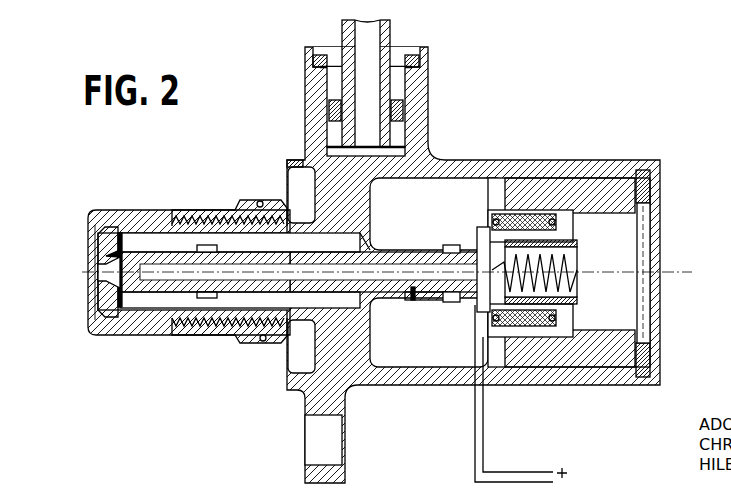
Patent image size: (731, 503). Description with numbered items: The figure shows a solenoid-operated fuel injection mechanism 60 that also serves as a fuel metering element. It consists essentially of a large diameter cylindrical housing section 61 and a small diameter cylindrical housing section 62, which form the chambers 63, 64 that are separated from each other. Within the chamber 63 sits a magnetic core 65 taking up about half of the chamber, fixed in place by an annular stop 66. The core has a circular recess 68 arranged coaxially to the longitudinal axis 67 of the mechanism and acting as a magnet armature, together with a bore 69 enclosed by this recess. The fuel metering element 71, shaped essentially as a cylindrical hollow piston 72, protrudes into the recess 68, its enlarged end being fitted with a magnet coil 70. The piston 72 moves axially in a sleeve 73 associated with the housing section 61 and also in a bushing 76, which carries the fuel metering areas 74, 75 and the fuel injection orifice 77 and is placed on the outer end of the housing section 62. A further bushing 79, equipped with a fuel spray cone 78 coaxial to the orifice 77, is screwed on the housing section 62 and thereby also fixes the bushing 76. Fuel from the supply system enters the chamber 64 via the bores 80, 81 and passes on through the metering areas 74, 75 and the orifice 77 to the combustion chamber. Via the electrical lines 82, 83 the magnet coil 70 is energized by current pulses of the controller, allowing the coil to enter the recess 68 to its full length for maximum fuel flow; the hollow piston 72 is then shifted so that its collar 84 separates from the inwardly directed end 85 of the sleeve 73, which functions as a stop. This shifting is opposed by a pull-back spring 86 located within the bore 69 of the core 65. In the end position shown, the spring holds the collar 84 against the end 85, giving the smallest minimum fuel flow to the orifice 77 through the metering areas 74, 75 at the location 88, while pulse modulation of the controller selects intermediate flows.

The fuel injection mechanism 60 is at (372, 245).
The large diameter cylindrical housing section 61 is at (511, 160).
The small diameter cylindrical housing section 62 is at (200, 312).
The chamber 63 is at (457, 206).
The chamber 64 is at (222, 242).
The magnetic core 65 is at (571, 178).
The annular stop 66 is at (650, 182).
The longitudinal axis 67 is at (676, 270).
The circular recess 68 is at (573, 222).
The bore 69 is at (567, 302).
The magnet coil 70 is at (552, 324).
The fuel metering element 71 is at (413, 300).
The hollow piston 72 is at (382, 292).
The sleeve 73 is at (384, 247).
The fuel metering area 74 is at (165, 250).
The fuel metering area 75 is at (133, 297).
The bushing 76 is at (118, 242).
The fuel injection orifice 77 is at (92, 285).
The fuel spray cone 78 is at (113, 258).
The bushing 79 is at (113, 207).
The bore 80 is at (378, 42).
The bore 81 is at (334, 172).
The electrical line 82 is at (477, 462).
The electrical line 83 is at (485, 462).
The collar 84 is at (449, 302).
The end of sleeve 85 is at (444, 245).
The pull-back spring 86 is at (533, 302).
The location 88 is at (110, 273).